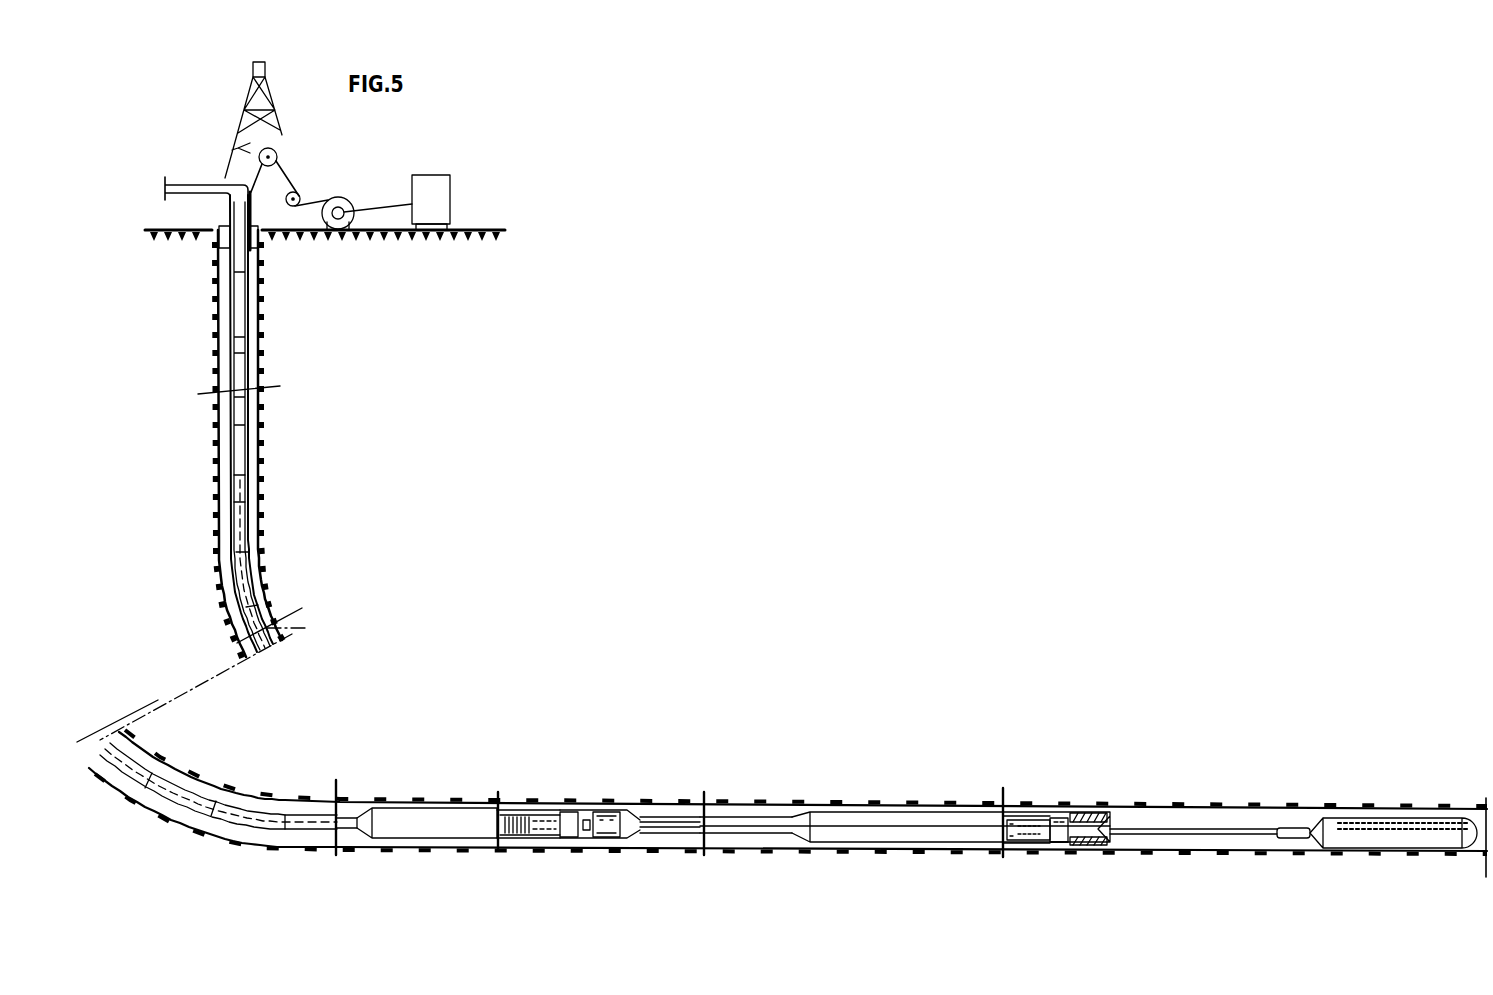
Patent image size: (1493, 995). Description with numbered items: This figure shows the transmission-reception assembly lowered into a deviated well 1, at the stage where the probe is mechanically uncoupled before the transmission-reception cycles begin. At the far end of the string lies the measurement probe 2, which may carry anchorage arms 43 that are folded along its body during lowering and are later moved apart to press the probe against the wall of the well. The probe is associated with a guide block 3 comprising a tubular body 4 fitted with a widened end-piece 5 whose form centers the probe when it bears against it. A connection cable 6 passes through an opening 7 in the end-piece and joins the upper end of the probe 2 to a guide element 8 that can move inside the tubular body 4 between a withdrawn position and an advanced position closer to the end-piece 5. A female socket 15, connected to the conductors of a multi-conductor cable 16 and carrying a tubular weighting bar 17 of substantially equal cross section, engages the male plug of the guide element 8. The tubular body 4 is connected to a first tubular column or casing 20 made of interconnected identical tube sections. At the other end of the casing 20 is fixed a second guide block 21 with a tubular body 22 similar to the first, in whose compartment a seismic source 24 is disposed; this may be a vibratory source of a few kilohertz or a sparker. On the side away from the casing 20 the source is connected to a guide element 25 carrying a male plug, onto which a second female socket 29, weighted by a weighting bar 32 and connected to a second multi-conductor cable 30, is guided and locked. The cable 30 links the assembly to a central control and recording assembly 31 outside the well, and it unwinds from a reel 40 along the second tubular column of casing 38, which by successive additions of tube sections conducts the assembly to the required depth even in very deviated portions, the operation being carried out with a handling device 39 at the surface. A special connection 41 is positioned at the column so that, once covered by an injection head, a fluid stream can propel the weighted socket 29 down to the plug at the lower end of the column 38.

The well 1 is at (1484, 798).
The measurement probe 2 is at (1378, 837).
The guide block 3 is at (1051, 720).
The tubular body 4 is at (862, 812).
The end-piece 5 is at (1083, 812).
The connection cable 6 is at (1197, 828).
The opening 7 is at (1055, 845).
The guide element 8 is at (1060, 820).
The female socket 15 is at (1028, 786).
The multi-conductor cable 16 is at (748, 826).
The tubular weighting bar 17 is at (1015, 796).
The first tubular column or casing 20 is at (680, 818).
The second guide block 21 is at (608, 791).
The tubular body 22 is at (446, 812).
The seismic source 24 is at (608, 838).
The guide element 25 is at (570, 812).
The female socket 29 is at (524, 792).
The second multi-conductor cable 30 is at (283, 175).
The central control and recording assembly 31 is at (433, 182).
The weighting bar 32 is at (521, 781).
The second tubular column of casing 38 is at (230, 439).
The handling device 39 is at (201, 77).
The reel 40 is at (340, 198).
The special connection 41 is at (230, 489).
The anchorage arms 43 is at (1438, 813).